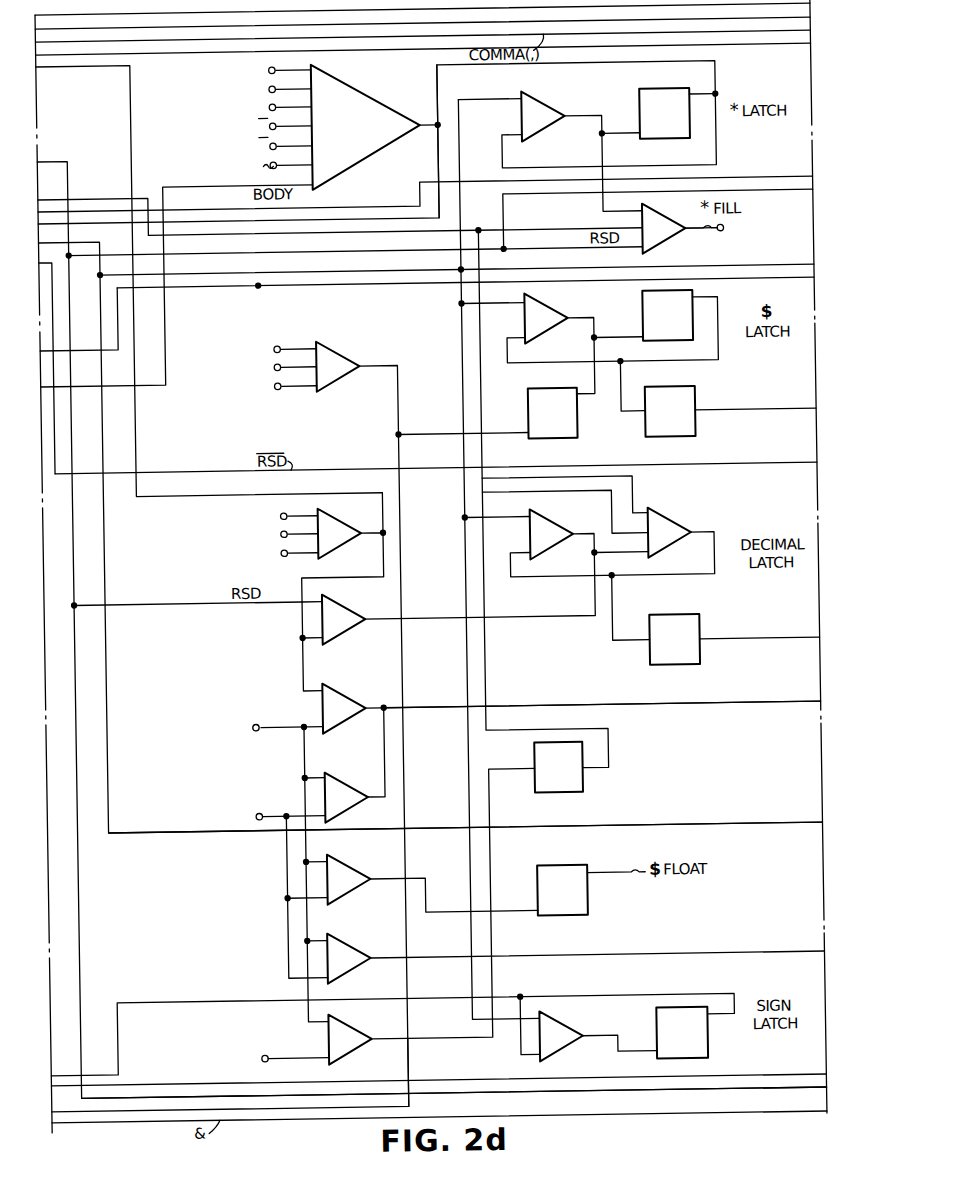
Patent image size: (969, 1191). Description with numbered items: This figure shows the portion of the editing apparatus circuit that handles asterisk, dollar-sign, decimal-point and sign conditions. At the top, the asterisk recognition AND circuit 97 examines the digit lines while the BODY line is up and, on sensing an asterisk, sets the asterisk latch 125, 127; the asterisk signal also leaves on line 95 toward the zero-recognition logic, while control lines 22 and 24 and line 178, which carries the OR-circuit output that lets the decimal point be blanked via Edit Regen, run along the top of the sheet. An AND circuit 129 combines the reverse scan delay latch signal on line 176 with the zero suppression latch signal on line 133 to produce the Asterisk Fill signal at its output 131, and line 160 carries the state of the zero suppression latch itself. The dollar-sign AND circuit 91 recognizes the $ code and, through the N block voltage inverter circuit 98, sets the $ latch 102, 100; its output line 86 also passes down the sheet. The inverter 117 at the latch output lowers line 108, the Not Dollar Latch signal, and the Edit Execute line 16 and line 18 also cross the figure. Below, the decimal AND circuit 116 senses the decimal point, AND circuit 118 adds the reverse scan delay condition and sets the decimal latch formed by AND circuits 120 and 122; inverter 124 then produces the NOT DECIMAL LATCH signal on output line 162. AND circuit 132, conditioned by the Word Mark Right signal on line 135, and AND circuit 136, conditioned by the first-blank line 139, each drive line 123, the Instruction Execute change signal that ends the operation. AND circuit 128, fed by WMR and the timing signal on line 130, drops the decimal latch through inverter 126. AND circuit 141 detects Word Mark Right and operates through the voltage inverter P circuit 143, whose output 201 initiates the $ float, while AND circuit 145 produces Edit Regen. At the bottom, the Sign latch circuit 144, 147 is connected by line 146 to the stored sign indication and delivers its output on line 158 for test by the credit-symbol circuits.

The bus line 22 is at (205, 55).
The bus line 24 is at (428, 29).
The line 178 is at (782, 15).
The asterisk recognition AND circuit 97 is at (398, 104).
The line 95 is at (436, 87).
The asterisk latch 125 is at (548, 99).
The asterisk latch 127 is at (672, 98).
The line 160 is at (492, 188).
The zero suppress latch line 133 is at (553, 238).
The reverse scan delay latch signal line 176 is at (784, 201).
The AND circuit 129 is at (672, 212).
The FILL output line 131 is at (704, 240).
The Edit Execute line 16 is at (704, 276).
The signal line 18 is at (254, 290).
The dollar latch 102 is at (564, 333).
The dollar latch 100 is at (640, 306).
The N block voltage inverter circuit 98 is at (523, 396).
The inverter 117 is at (688, 398).
The line 108 is at (756, 420).
The AND circuit 91 is at (347, 385).
The decimal AND circuit 116 is at (335, 552).
The decimal latch AND circuit 120 is at (562, 554).
The decimal latch AND circuit 122 is at (663, 554).
The inverter 124 is at (690, 638).
The output line 162 is at (780, 649).
The AND circuit 118 is at (345, 631).
The AND circuit 132 is at (331, 721).
The line 135 is at (276, 731).
The line 123 is at (744, 713).
The AND circuit 136 is at (344, 809).
The line 139 is at (271, 820).
The inverter 126 is at (523, 762).
The AND circuit 141 is at (337, 875).
The voltage inverter P circuit 143 is at (562, 873).
The FLOAT output line 201 is at (616, 885).
The AND circuit 145 is at (345, 945).
The line 146 is at (266, 1004).
The AND circuit 128 is at (335, 1029).
The timing input 130 is at (252, 1059).
The signal line 86 is at (392, 1052).
The sign latch circuit 144 is at (562, 1026).
The sign latch circuit 147 is at (692, 1045).
The output line 158 is at (762, 1086).